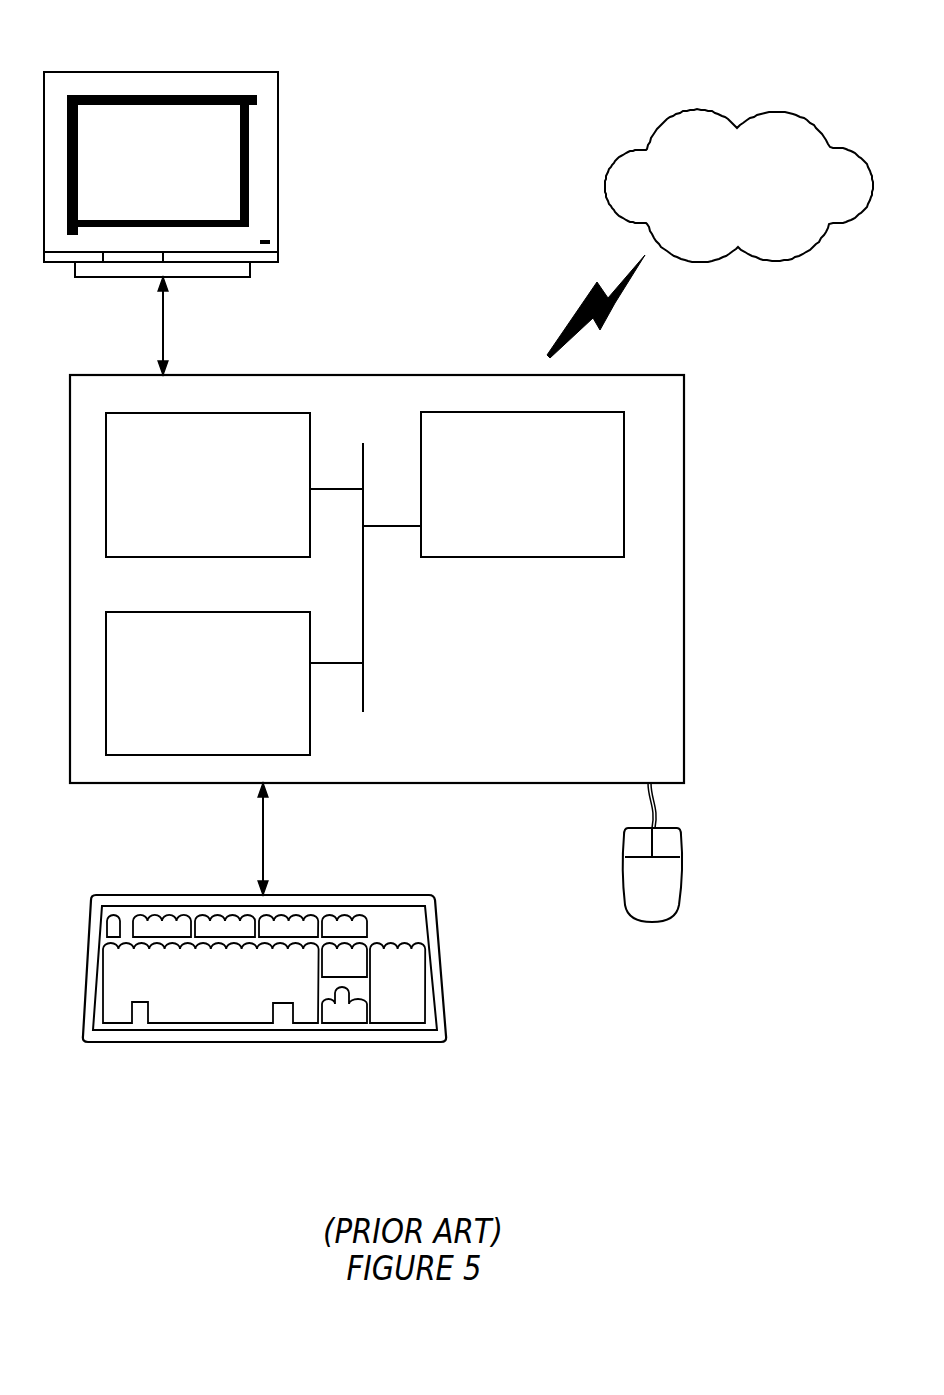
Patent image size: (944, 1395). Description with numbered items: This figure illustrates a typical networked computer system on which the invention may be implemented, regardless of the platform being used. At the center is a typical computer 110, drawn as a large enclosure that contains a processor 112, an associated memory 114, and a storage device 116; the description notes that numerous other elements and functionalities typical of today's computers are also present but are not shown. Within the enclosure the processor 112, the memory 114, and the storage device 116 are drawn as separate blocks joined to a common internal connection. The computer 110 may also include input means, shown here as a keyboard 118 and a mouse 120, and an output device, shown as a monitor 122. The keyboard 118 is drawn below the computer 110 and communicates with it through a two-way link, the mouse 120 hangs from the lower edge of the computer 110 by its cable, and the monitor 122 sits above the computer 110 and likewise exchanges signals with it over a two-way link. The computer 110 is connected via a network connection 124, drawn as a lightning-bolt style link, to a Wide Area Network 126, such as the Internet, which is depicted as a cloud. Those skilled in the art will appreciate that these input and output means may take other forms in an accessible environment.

The computer 110 is at (686, 667).
The processor 112 is at (516, 499).
The memory 114 is at (187, 499).
The storage device 116 is at (184, 698).
The keyboard 118 is at (170, 992).
The mouse 120 is at (632, 899).
The monitor 122 is at (144, 188).
The network connection 124 is at (585, 298).
The Wide Area Network (WAN) 126 is at (698, 112).